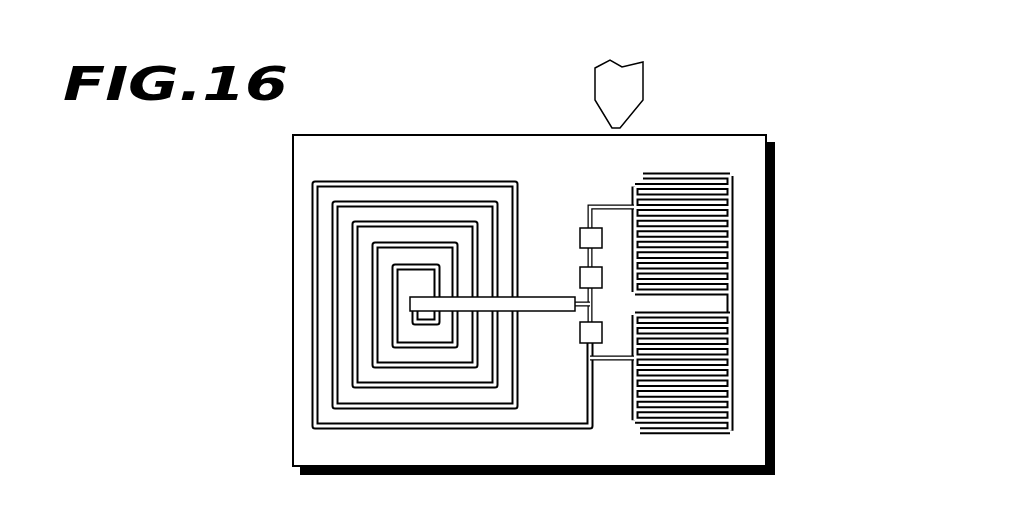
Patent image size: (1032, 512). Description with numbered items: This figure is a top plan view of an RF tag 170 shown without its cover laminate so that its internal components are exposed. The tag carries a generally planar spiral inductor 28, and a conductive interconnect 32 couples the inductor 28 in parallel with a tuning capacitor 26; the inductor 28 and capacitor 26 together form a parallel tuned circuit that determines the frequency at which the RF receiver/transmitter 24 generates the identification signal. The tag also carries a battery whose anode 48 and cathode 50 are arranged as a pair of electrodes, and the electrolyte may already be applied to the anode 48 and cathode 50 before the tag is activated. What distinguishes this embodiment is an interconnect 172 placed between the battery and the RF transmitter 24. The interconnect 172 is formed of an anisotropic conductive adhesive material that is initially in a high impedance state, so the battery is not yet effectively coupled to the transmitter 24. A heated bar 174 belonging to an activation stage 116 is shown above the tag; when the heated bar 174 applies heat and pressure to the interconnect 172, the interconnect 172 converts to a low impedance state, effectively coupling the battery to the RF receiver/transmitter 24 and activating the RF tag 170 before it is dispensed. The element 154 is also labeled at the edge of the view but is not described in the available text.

The activation stage 116 is at (664, 52).
The lead 154 is at (281, 0).
The RF tag 170 is at (776, 278).
The inductor 28 is at (405, 182).
The conductive interconnect 32 is at (551, 312).
The RF receiver/transmitter 24 is at (580, 277).
The tuning capacitor 26 is at (581, 344).
The interconnect 172 is at (580, 229).
The anode 48 is at (726, 172).
The cathode 50 is at (734, 383).
The heated bar 174 is at (631, 97).